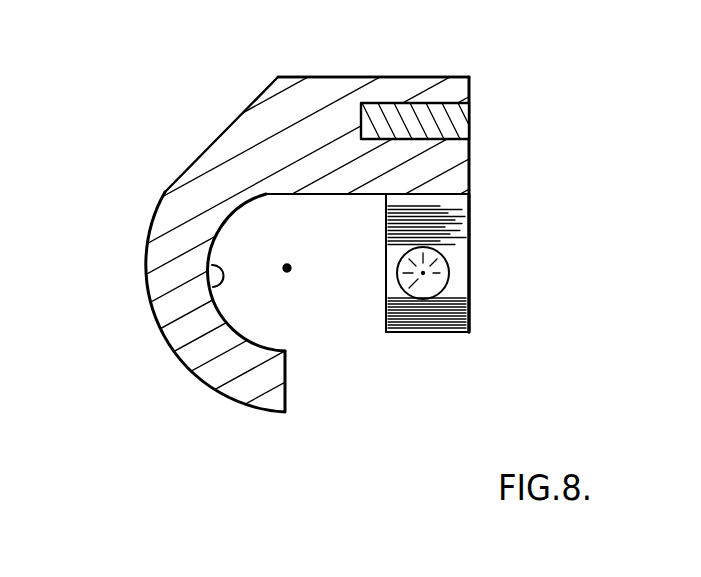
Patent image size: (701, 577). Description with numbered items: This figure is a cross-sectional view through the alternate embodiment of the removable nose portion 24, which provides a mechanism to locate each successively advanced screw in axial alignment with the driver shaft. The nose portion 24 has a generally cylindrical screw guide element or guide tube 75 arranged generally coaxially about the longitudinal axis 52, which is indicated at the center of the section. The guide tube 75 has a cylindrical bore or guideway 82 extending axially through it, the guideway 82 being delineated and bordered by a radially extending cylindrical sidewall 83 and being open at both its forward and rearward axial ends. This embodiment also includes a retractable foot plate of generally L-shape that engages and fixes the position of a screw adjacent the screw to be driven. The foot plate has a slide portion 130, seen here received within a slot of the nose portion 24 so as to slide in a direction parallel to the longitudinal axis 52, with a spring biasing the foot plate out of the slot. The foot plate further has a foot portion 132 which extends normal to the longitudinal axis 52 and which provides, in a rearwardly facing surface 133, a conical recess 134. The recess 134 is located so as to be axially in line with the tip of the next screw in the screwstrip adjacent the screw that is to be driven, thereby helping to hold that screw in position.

The nose portion 24 is at (352, 77).
The longitudinal axis 52 is at (292, 265).
The guide tube 75 is at (252, 135).
The guideway 82 is at (252, 298).
The cylindrical sidewall 83 is at (210, 270).
The slide portion 130 is at (472, 115).
The foot portion 132 is at (470, 328).
The rearwardly facing surface 133 is at (465, 223).
The conical recess 134 is at (447, 279).